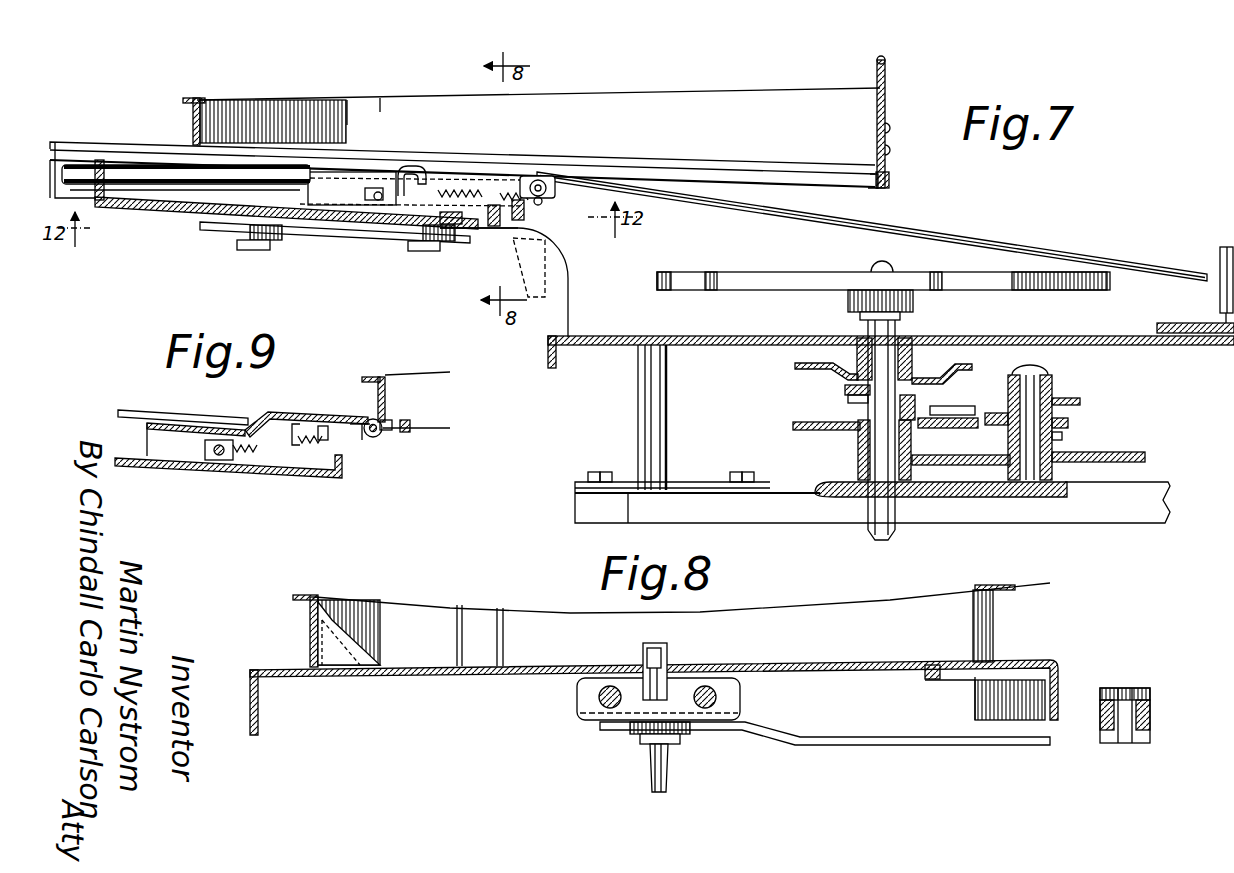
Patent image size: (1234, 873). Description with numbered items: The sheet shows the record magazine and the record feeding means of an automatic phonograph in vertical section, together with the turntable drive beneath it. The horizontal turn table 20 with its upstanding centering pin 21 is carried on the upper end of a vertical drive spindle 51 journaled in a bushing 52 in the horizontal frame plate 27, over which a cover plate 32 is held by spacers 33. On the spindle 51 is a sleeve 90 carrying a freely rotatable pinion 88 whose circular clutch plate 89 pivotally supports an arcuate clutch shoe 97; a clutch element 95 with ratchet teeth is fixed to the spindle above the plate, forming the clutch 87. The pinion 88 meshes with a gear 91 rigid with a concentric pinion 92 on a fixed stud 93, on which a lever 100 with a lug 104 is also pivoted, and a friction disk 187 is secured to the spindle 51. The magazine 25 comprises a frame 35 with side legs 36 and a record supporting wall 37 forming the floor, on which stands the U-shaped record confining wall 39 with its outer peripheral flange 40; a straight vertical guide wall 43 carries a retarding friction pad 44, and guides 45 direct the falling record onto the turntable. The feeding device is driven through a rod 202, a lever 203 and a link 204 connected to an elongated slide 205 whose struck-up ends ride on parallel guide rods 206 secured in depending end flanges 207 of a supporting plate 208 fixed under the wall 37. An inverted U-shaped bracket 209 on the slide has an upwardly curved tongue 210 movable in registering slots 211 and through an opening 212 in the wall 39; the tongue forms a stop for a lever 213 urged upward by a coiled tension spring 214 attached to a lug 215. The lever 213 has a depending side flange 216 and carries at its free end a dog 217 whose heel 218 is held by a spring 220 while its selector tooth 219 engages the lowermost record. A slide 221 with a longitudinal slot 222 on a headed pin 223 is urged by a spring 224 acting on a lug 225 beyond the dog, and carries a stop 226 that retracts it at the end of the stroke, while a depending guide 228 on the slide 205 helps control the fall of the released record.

In FIG. 7, the turn table 20 is at (753, 282).
In FIG. 7, the centering pin 21 is at (872, 262).
In FIG. 7, the magazine 25 is at (692, 112).
In FIG. 8, the magazine 25 is at (527, 636).
In FIG. 7, the frame plate 27 is at (1112, 508).
In FIG. 7, the cover plate 32 is at (718, 346).
In FIG. 7, the spacers 33 is at (668, 425).
In FIG. 8, the frame 35 is at (260, 715).
In FIG. 7, the side legs 36 is at (592, 320).
In FIG. 8, the record supporting wall 37 is at (525, 677).
In FIG. 7, the record confining wall 39 is at (425, 102).
In FIG. 9, the record confining wall 39 is at (386, 380).
In FIG. 8, the record confining wall 39 is at (1000, 635).
In FIG. 7, the outer peripheral flange 40 is at (196, 98).
In FIG. 9, the outer peripheral flange 40 is at (371, 377).
In FIG. 8, the outer peripheral flange 40 is at (1010, 592).
In FIG. 7, the vertical guide wall 43 is at (886, 93).
In FIG. 7, the retarding friction pad 44 is at (890, 182).
In FIG. 7, the guides 45 is at (1222, 257).
In FIG. 7, the drive spindle 51 is at (898, 318).
In FIG. 7, the bushing 52 is at (858, 500).
In FIG. 7, the clutch 87 is at (840, 410).
In FIG. 7, the pinion 88 is at (857, 460).
In FIG. 7, the circular clutch plate 89 is at (795, 426).
In FIG. 7, the sleeve 90 is at (925, 386).
In FIG. 7, the gear 91 is at (968, 456).
In FIG. 7, the pinion 92 is at (1068, 424).
In FIG. 7, the fixed stud 93 is at (1062, 440).
In FIG. 7, the clutch element 95 is at (916, 405).
In FIG. 7, the arcuate clutch shoe 97 is at (970, 405).
In FIG. 7, the lever 100 is at (1052, 387).
In FIG. 7, the lug 104 is at (1080, 402).
In FIG. 7, the friction disk 187 is at (796, 366).
In FIG. 8, the rod 202 is at (1150, 715).
In FIG. 7, the lever 203 is at (205, 227).
In FIG. 8, the lever 203 is at (885, 740).
In FIG. 7, the link 204 is at (325, 226).
In FIG. 8, the link 204 is at (704, 738).
In FIG. 7, the slide 205 is at (160, 210).
In FIG. 9, the slide 205 is at (128, 465).
In FIG. 8, the slide 205 is at (742, 702).
In FIG. 7, the guide rods 206 is at (128, 178).
In FIG. 8, the guide rods 206 is at (718, 695).
In FIG. 7, the end flanges 207 is at (526, 213).
In FIG. 7, the supporting plate 208 is at (90, 200).
In FIG. 7, the bracket 209 is at (340, 185).
In FIG. 9, the bracket 209 is at (172, 426).
In FIG. 9, the tongue 210 is at (258, 416).
In FIG. 7, the slots 211 is at (167, 162).
In FIG. 9, the slots 211 is at (152, 420).
In FIG. 7, the opening 212 is at (206, 135).
In FIG. 9, the lever 213 is at (293, 424).
In FIG. 9, the coiled tension spring 214 is at (240, 463).
In FIG. 9, the lug 215 is at (208, 450).
In FIG. 7, the side flange 216 is at (424, 178).
In FIG. 9, the dog 217 is at (374, 438).
In FIG. 8, the dog 217 is at (663, 695).
In FIG. 9, the heel 218 is at (362, 440).
In FIG. 7, the selector tooth 219 is at (545, 178).
In FIG. 9, the selector tooth 219 is at (385, 424).
In FIG. 8, the selector tooth 219 is at (644, 652).
In FIG. 7, the coiled tension spring 220 is at (543, 203).
In FIG. 9, the slide 221 is at (408, 432).
In FIG. 8, the slide 221 is at (665, 655).
In FIG. 9, the longitudinal slot 222 is at (358, 422).
In FIG. 9, the headed pin 223 is at (340, 437).
In FIG. 9, the coiled tension spring 224 is at (308, 445).
In FIG. 7, the lug 225 is at (458, 226).
In FIG. 7, the stop 226 is at (493, 227).
In FIG. 7, the guide 228 is at (547, 270).